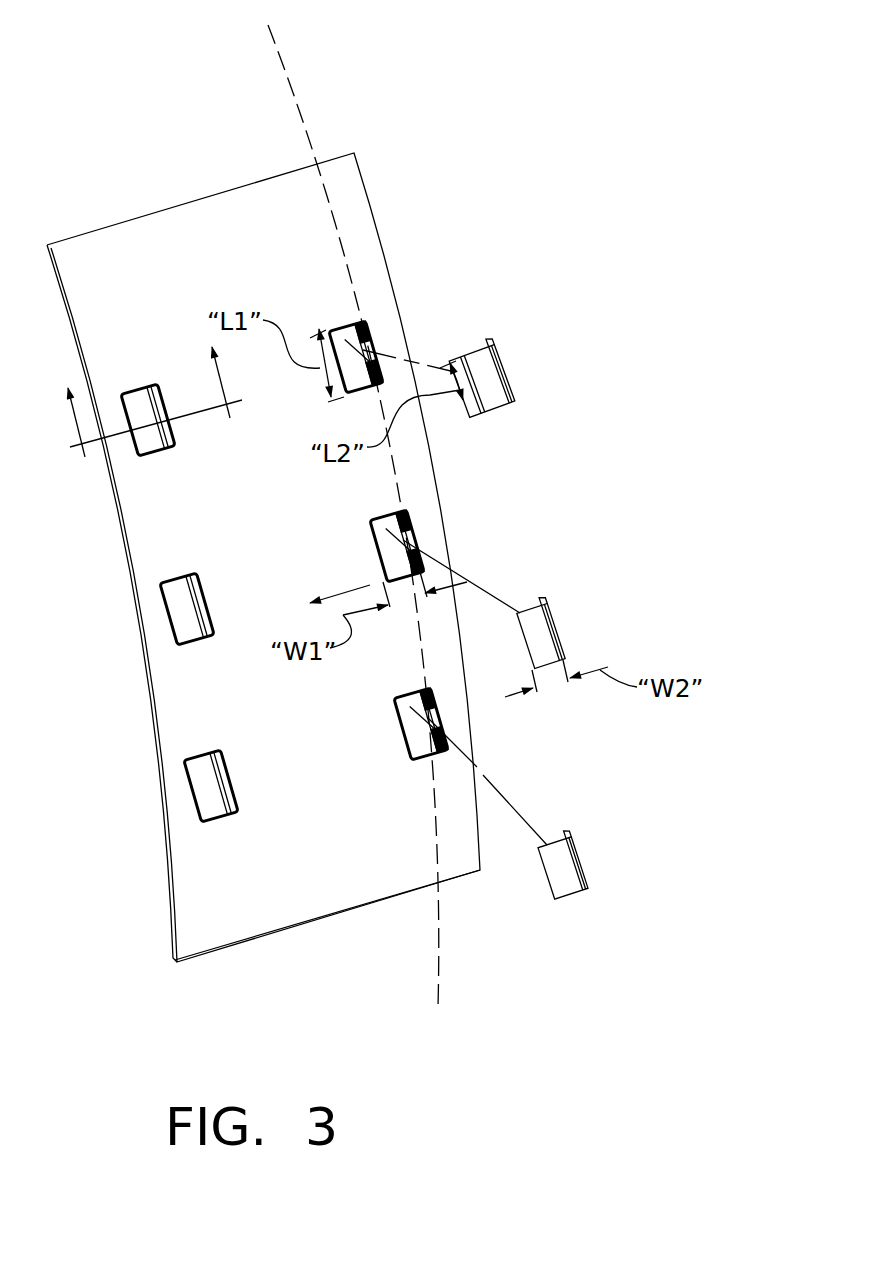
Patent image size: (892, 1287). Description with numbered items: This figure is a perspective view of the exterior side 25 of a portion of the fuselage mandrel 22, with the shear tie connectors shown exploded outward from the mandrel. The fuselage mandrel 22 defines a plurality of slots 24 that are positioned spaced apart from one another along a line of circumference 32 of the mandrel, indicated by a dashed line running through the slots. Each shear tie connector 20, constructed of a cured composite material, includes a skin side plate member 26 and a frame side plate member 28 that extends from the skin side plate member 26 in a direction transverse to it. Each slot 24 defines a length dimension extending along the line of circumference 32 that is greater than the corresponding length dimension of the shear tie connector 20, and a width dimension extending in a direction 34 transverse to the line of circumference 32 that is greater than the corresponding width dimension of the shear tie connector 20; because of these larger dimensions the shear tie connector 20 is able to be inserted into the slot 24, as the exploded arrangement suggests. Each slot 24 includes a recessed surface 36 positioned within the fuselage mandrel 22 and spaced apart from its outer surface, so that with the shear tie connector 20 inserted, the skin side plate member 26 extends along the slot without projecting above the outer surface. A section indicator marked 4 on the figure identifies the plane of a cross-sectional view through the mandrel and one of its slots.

The shear tie connector 20 is at (488, 380).
The fuselage mandrel 22 is at (237, 227).
The slot 24 is at (360, 320).
The exterior side 25 is at (303, 855).
The skin side plate member 26 is at (145, 445).
The frame side plate member 28 is at (497, 345).
The line of circumference 32 is at (293, 92).
The direction 34 is at (352, 590).
The recessed surface 36 is at (360, 322).
The section line 4- 4 is at (156, 423).